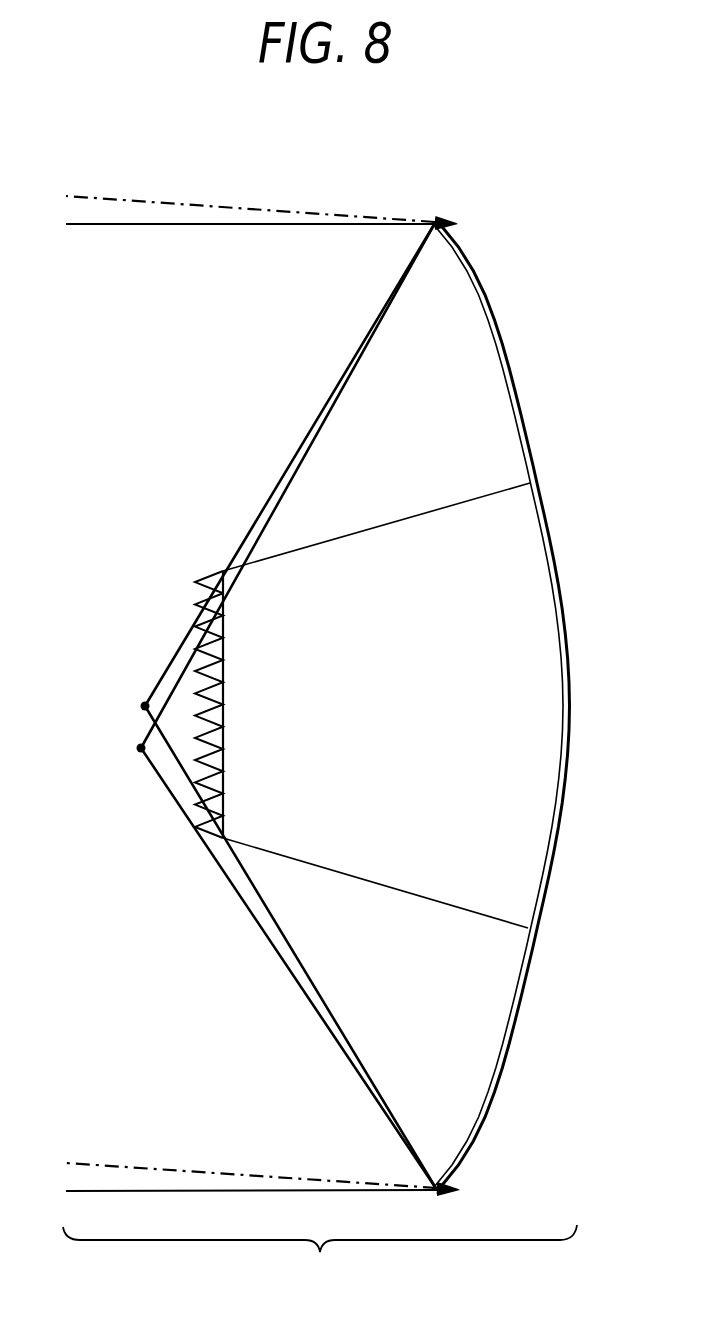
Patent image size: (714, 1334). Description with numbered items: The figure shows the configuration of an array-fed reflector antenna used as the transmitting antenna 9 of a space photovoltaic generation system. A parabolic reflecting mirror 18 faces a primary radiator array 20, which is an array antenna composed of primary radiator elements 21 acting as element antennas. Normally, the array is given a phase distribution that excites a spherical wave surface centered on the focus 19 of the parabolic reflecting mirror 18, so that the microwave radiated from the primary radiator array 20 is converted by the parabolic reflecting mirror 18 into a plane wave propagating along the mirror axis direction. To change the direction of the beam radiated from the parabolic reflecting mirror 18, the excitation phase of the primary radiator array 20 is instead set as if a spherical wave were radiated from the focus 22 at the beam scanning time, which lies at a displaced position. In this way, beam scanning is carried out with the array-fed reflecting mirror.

The transmitting antenna 9 is at (331, 1294).
The parabolic reflecting mirror 18 is at (519, 396).
The focus of the parabolic reflecting mirror 19 is at (141, 706).
The primary radiator array 20 is at (201, 704).
The primary radiator element 21 is at (188, 597).
The focus at the beam scanning time 22 is at (137, 748).